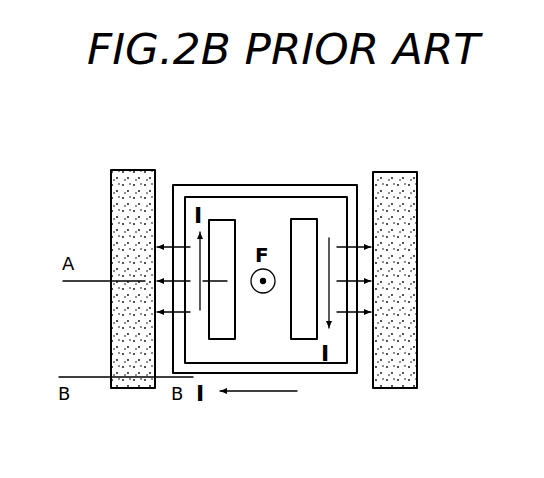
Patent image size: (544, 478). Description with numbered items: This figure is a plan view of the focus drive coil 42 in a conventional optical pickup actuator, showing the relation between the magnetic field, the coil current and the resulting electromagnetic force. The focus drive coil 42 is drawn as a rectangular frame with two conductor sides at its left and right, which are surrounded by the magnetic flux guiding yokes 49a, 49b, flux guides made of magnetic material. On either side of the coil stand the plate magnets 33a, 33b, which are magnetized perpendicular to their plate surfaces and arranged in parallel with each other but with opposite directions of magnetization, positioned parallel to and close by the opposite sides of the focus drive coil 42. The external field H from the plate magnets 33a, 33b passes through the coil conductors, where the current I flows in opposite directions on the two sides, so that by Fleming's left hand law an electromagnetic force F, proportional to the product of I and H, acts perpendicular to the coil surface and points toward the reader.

The focus drive coil 42 is at (258, 185).
The magnetic flux guiding yoke 49a is at (215, 220).
The magnetic flux guiding yoke 49b is at (307, 219).
The plate magnet 33a is at (133, 388).
The plate magnet 33b is at (395, 388).